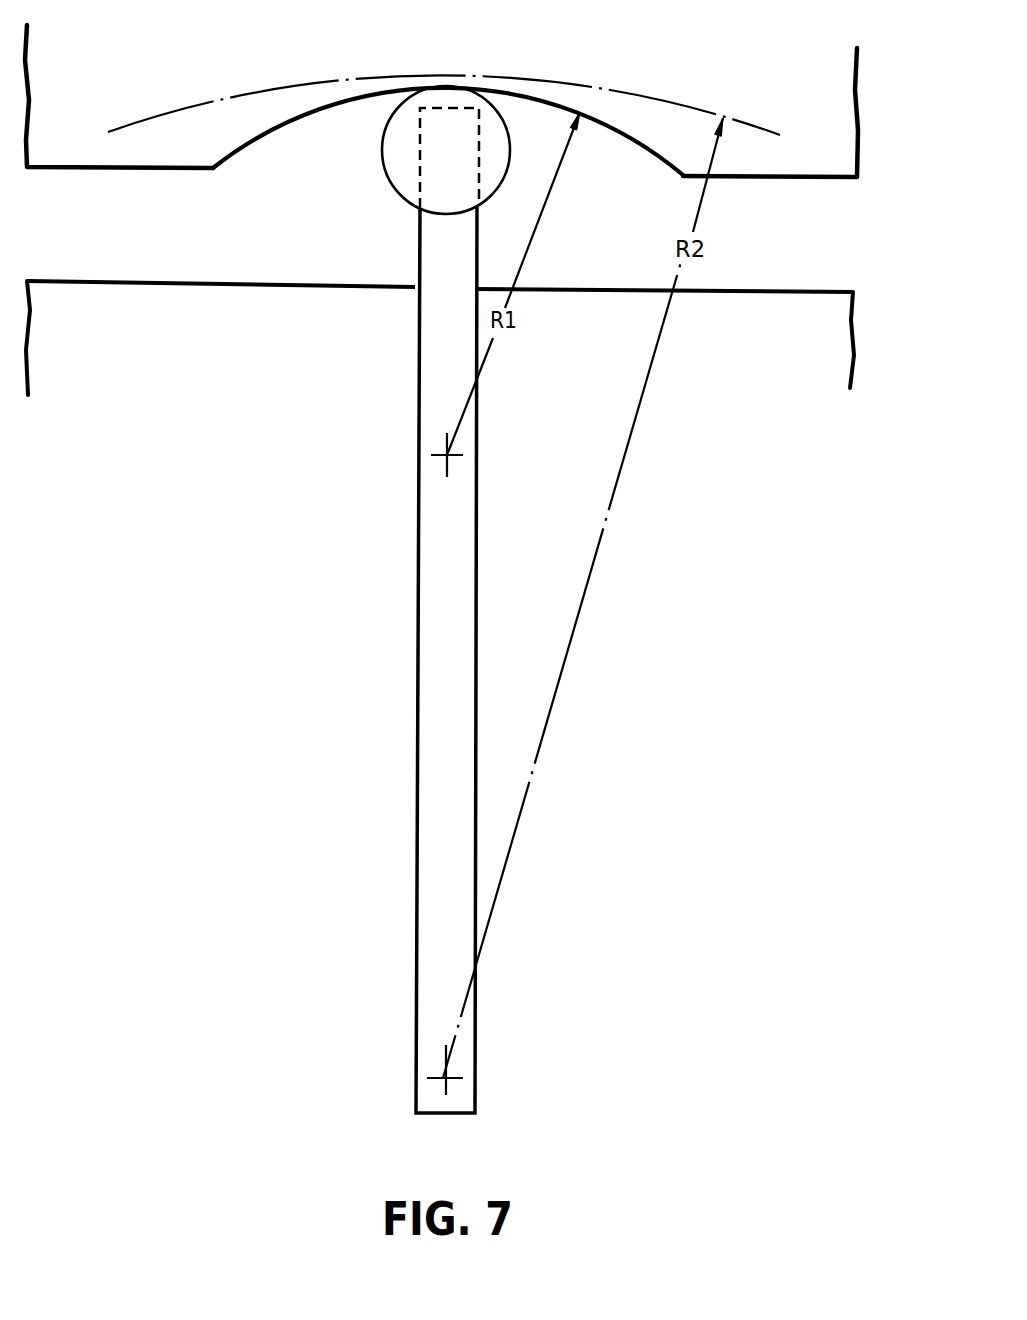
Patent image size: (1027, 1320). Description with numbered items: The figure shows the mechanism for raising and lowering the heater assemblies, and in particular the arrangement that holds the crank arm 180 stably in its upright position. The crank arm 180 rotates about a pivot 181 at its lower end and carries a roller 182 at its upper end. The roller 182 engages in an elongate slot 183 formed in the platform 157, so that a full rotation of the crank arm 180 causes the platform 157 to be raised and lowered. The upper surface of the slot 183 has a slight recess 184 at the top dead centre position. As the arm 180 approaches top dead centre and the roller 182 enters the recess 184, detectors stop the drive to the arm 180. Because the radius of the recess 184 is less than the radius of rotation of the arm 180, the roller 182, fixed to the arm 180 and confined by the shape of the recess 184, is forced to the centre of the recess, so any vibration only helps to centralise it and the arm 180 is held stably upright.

The platform 157 is at (247, 352).
The crank arm 180 is at (433, 785).
The pivot 181 is at (450, 1075).
The roller 182 is at (448, 135).
The elongate slot 183 is at (825, 243).
The recess 184 is at (293, 118).